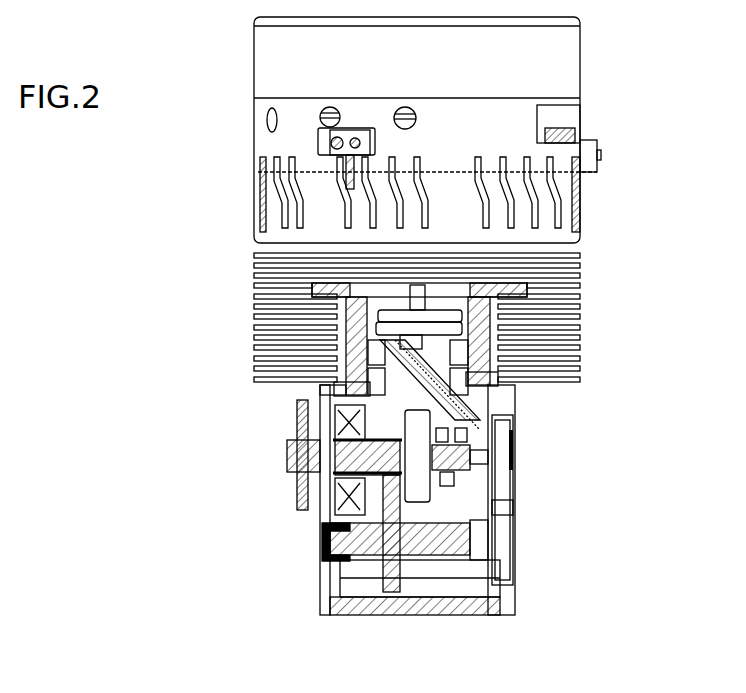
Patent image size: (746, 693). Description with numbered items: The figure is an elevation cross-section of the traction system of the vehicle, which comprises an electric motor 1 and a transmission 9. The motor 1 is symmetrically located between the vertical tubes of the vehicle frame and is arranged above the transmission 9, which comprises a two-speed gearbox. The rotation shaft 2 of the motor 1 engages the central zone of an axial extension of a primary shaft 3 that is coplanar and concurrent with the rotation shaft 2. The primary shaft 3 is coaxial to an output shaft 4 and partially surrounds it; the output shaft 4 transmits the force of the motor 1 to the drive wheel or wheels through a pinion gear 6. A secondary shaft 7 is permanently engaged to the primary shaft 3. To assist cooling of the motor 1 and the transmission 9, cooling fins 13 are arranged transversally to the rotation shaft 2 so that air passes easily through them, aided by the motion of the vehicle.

The electric motor 1 is at (256, 182).
The rotation shaft 2 is at (320, 279).
The primary shaft 3 is at (330, 437).
The output shaft 4 is at (296, 462).
The pinion gear 6 is at (296, 492).
The secondary shaft 7 is at (320, 568).
The transmission element 9 is at (520, 498).
The cooling fins 13 is at (580, 326).